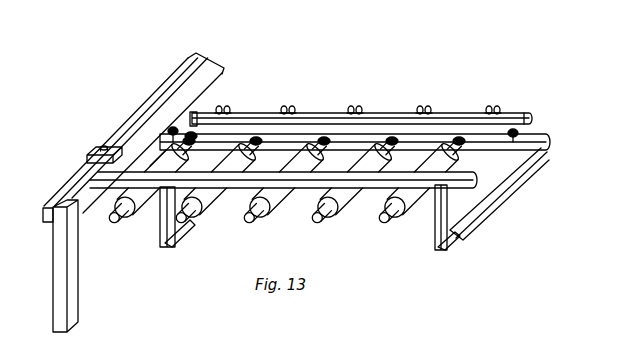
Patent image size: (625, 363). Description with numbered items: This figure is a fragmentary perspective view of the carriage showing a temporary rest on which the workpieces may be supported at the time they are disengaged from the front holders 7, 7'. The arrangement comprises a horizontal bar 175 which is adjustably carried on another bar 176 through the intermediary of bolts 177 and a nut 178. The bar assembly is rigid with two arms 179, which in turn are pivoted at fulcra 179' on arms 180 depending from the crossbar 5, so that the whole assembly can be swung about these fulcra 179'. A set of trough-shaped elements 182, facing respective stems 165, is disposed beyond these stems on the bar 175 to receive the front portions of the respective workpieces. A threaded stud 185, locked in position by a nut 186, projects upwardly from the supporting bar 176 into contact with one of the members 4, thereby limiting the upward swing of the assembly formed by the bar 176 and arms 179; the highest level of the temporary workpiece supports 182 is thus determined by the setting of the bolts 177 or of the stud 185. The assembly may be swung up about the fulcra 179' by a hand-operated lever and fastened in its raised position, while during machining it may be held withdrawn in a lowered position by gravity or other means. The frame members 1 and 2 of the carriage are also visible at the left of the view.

The base block 1 is at (48, 210).
The post 2 is at (70, 280).
The member 4 is at (93, 173).
The crossbar 5 is at (316, 184).
The front holder 7 is at (284, 196).
The roller 7' is at (226, 185).
The stem 165 is at (250, 140).
The horizontal bar 175 is at (313, 118).
The bar 176 is at (450, 138).
The bolt 177 is at (186, 132).
The nut 178 is at (196, 117).
The arm 179 is at (357, 227).
The fulcrum 179' is at (452, 261).
The arm 180 is at (165, 215).
The trough-shaped element 182 is at (290, 114).
The threaded stud 185 is at (170, 129).
The nut 186 is at (163, 157).